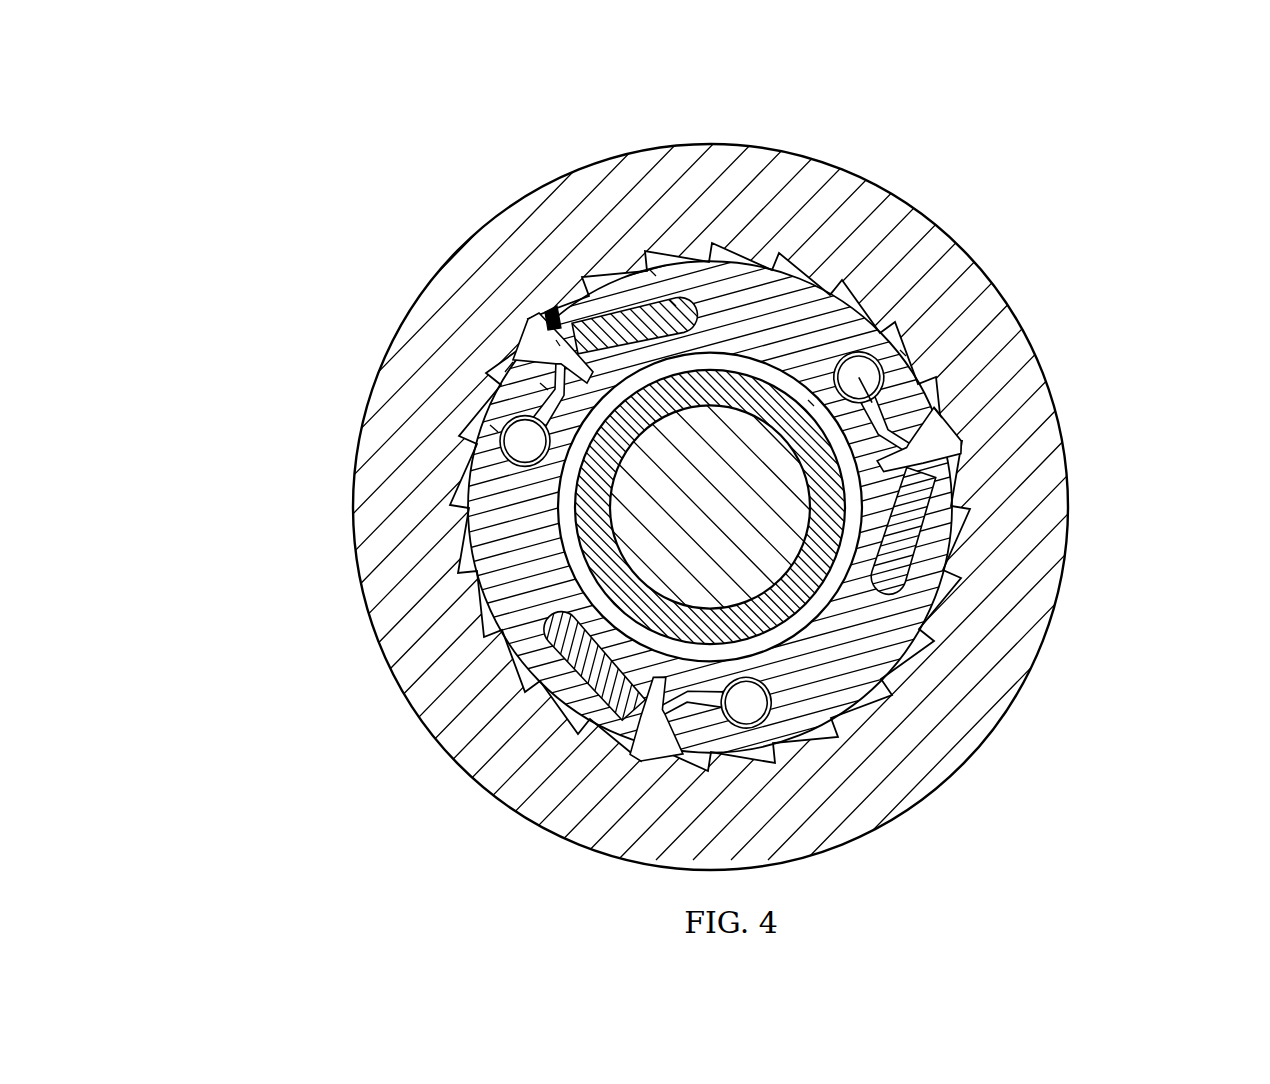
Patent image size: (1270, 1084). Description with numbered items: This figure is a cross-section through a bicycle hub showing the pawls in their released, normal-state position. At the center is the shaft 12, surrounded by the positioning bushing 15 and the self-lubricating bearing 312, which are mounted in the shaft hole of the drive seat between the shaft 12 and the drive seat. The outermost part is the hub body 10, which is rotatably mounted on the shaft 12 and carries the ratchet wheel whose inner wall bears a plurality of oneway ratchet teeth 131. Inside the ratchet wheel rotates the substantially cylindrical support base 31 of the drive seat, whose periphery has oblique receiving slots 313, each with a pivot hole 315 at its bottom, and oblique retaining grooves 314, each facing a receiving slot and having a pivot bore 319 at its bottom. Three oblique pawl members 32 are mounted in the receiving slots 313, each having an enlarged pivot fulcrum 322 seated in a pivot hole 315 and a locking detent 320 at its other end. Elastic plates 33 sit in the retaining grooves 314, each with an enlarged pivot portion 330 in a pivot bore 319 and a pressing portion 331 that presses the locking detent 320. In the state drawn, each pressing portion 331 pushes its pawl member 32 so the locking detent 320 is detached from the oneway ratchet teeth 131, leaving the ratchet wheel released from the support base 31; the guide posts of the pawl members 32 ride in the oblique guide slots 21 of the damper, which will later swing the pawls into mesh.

The hub body 10 is at (360, 600).
The shaft 12 is at (650, 538).
The positioning bushing 15 is at (757, 617).
The oblique guide slots 21 is at (568, 345).
The support base 31 is at (852, 647).
The pawl members 32 is at (627, 295).
The elastic plates 33 is at (505, 378).
The oneway ratchet teeth 131 is at (470, 500).
The self-lubricating bearing 312 is at (808, 400).
The receiving slots 313 is at (540, 385).
The retaining grooves 314 is at (670, 300).
The pivot hole 315 is at (490, 424).
The pivot bore 319 is at (650, 270).
The locking detent 320 is at (548, 350).
The enlarged pivot fulcrum 322 is at (695, 312).
The enlarged pivot portion 330 is at (900, 350).
The pressing portion 331 is at (552, 335).